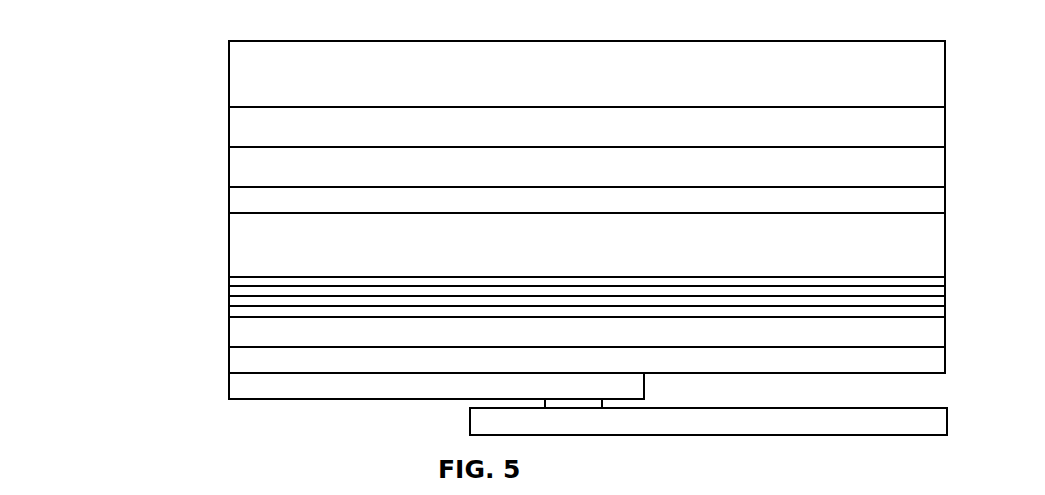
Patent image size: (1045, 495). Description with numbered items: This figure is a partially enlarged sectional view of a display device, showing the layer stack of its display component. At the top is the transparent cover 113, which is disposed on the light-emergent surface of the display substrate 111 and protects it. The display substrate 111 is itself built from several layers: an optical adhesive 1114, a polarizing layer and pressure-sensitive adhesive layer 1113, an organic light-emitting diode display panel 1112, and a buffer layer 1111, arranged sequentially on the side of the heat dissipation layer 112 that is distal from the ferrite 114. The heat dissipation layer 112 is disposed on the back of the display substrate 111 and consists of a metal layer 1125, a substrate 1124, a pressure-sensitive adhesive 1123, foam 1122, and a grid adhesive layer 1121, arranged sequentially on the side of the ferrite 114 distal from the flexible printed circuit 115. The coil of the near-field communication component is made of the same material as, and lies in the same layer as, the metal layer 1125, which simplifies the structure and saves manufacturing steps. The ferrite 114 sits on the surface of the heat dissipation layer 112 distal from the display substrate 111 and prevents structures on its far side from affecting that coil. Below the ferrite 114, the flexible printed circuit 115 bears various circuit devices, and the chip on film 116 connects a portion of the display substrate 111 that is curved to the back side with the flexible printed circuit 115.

The transparent cover 113 is at (229, 71).
The display substrate 111 is at (87, 103).
The optical adhesive 1114 is at (229, 130).
The polarizing layer and pressure-sensitive adhesive layer 1113 is at (229, 168).
The organic light-emitting diode display panel 1112 is at (229, 197).
The buffer layer 1111 is at (229, 221).
The heat dissipation layer 112 is at (87, 228).
The metal layer 1125 is at (229, 279).
The substrate 1124 is at (229, 290).
The pressure-sensitive adhesive 1123 is at (229, 300).
The foam 1122 is at (229, 317).
The grid adhesive layer 1121 is at (229, 347).
The ferrite 114 is at (229, 365).
The flexible printed circuit 115 is at (229, 393).
The chip on film 116 is at (473, 423).